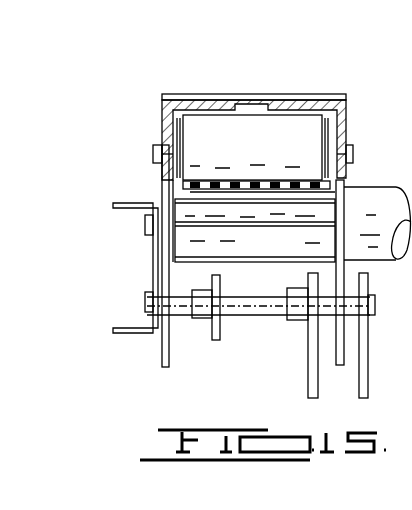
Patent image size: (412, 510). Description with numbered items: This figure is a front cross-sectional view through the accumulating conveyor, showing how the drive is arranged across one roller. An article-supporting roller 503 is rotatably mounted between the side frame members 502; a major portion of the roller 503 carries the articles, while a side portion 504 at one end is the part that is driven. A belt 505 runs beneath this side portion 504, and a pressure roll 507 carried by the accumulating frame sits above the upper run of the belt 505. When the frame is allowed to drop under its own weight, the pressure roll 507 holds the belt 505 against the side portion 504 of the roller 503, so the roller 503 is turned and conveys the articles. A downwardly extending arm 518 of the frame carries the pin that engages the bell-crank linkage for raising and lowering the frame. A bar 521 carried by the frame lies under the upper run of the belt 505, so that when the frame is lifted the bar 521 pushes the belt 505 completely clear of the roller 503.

The frame member 502 is at (132, 200).
The article-supporting roller 503 is at (367, 190).
The side portion of roller 504 is at (262, 272).
The belt 505 is at (238, 181).
The pressure roll 507 is at (210, 122).
The downwardly extending arm 518 is at (162, 262).
The bar 521 is at (262, 220).